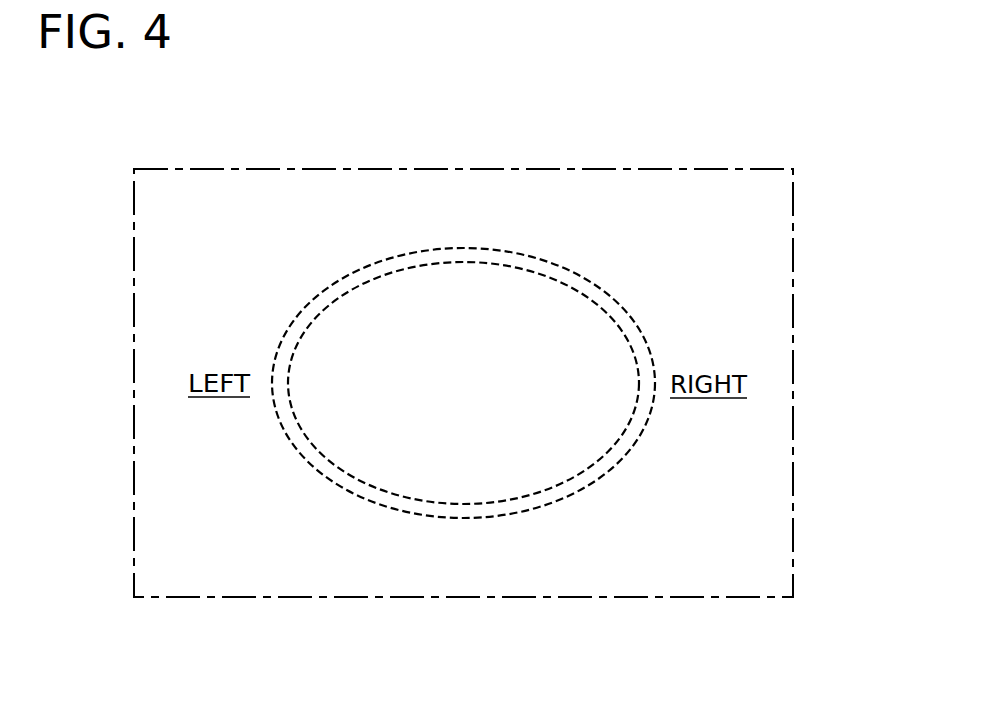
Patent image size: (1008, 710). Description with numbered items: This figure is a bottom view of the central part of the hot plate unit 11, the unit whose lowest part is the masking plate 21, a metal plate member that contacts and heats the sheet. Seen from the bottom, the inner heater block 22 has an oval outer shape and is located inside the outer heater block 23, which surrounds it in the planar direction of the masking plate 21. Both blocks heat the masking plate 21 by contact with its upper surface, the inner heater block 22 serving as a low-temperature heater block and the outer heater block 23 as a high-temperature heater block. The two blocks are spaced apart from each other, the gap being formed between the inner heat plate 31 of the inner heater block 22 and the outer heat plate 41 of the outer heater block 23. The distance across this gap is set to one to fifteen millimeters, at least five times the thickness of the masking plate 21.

The hot plate unit 11 is at (626, 143).
The masking plate 21 is at (682, 508).
The inner heat plate 31 is at (463, 459).
The inner heater block 22 is at (385, 452).
The outer heat plate 41 is at (510, 383).
The outer heater block 23 is at (740, 427).